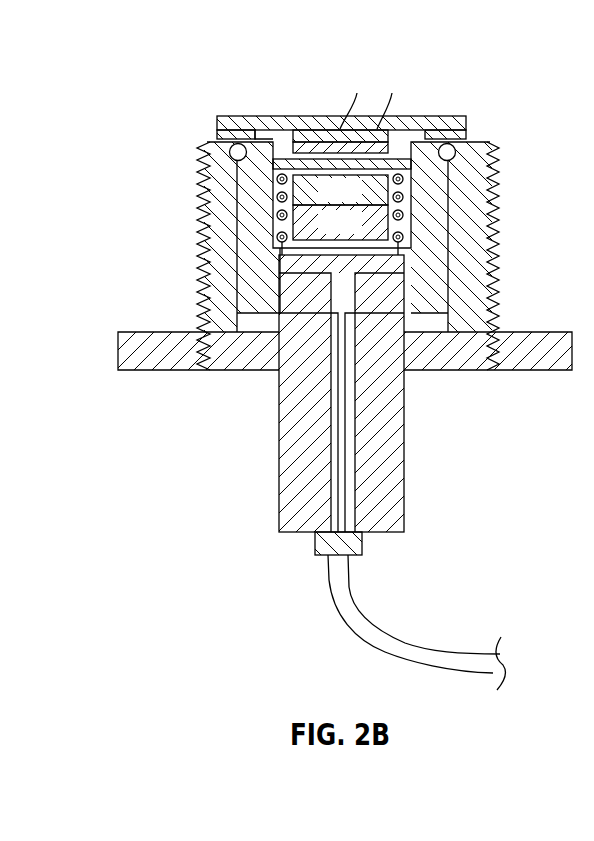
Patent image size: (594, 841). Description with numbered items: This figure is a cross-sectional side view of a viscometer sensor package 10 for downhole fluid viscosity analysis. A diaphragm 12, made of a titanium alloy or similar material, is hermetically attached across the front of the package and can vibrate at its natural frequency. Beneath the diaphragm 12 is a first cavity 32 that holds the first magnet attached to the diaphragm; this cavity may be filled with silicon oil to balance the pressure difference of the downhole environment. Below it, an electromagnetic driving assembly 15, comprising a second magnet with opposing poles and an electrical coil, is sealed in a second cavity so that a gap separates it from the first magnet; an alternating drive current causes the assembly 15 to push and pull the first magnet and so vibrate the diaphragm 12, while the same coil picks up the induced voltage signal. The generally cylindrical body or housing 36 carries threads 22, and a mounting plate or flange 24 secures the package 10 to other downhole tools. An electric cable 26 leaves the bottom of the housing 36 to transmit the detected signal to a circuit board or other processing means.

The viscometer sensor package 10 is at (341, 367).
The diaphragm 12 is at (327, 118).
The electromagnetic driving assembly 15 is at (381, 246).
The threads 22 is at (200, 252).
The mounting plate or flange 24 is at (448, 372).
The electric cable 26 is at (391, 638).
The first cavity 32 is at (277, 136).
The cylindrical body or housing 36 is at (185, 167).